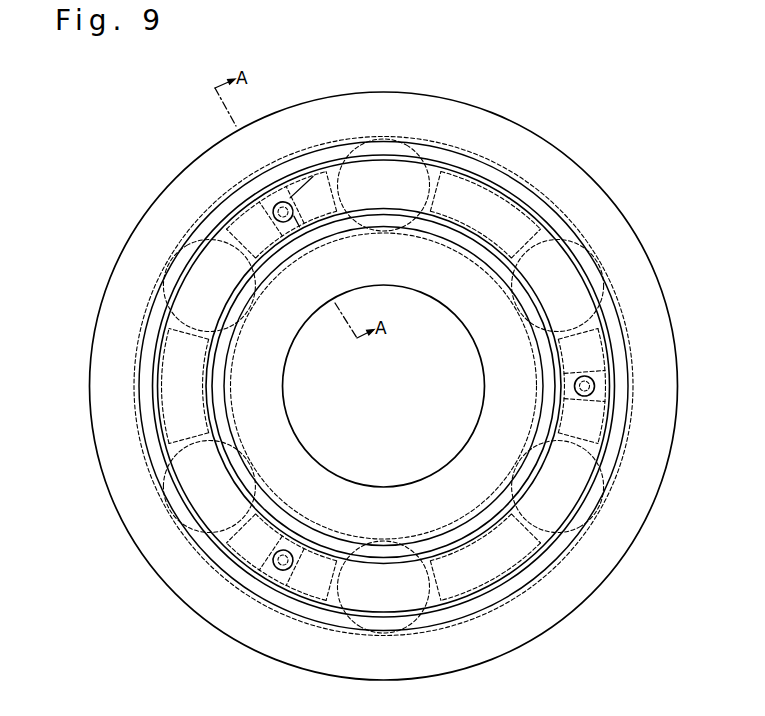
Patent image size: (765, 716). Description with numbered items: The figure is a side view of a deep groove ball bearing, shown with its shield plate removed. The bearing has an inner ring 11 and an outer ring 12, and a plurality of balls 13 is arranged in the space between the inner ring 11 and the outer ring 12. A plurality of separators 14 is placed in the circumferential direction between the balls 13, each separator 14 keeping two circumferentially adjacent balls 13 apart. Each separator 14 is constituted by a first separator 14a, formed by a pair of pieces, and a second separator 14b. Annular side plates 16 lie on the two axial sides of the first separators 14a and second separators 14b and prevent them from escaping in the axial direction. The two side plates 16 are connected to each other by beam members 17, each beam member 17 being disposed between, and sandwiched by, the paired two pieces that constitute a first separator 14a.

The inner ring 11 is at (511, 359).
The outer ring 12 is at (561, 206).
The balls 13 is at (562, 283).
The separator 14 is at (393, 44).
The first separator 14a is at (318, 192).
The second separator 14b is at (472, 205).
The side plate 16 is at (274, 201).
The beam member 17 is at (272, 212).